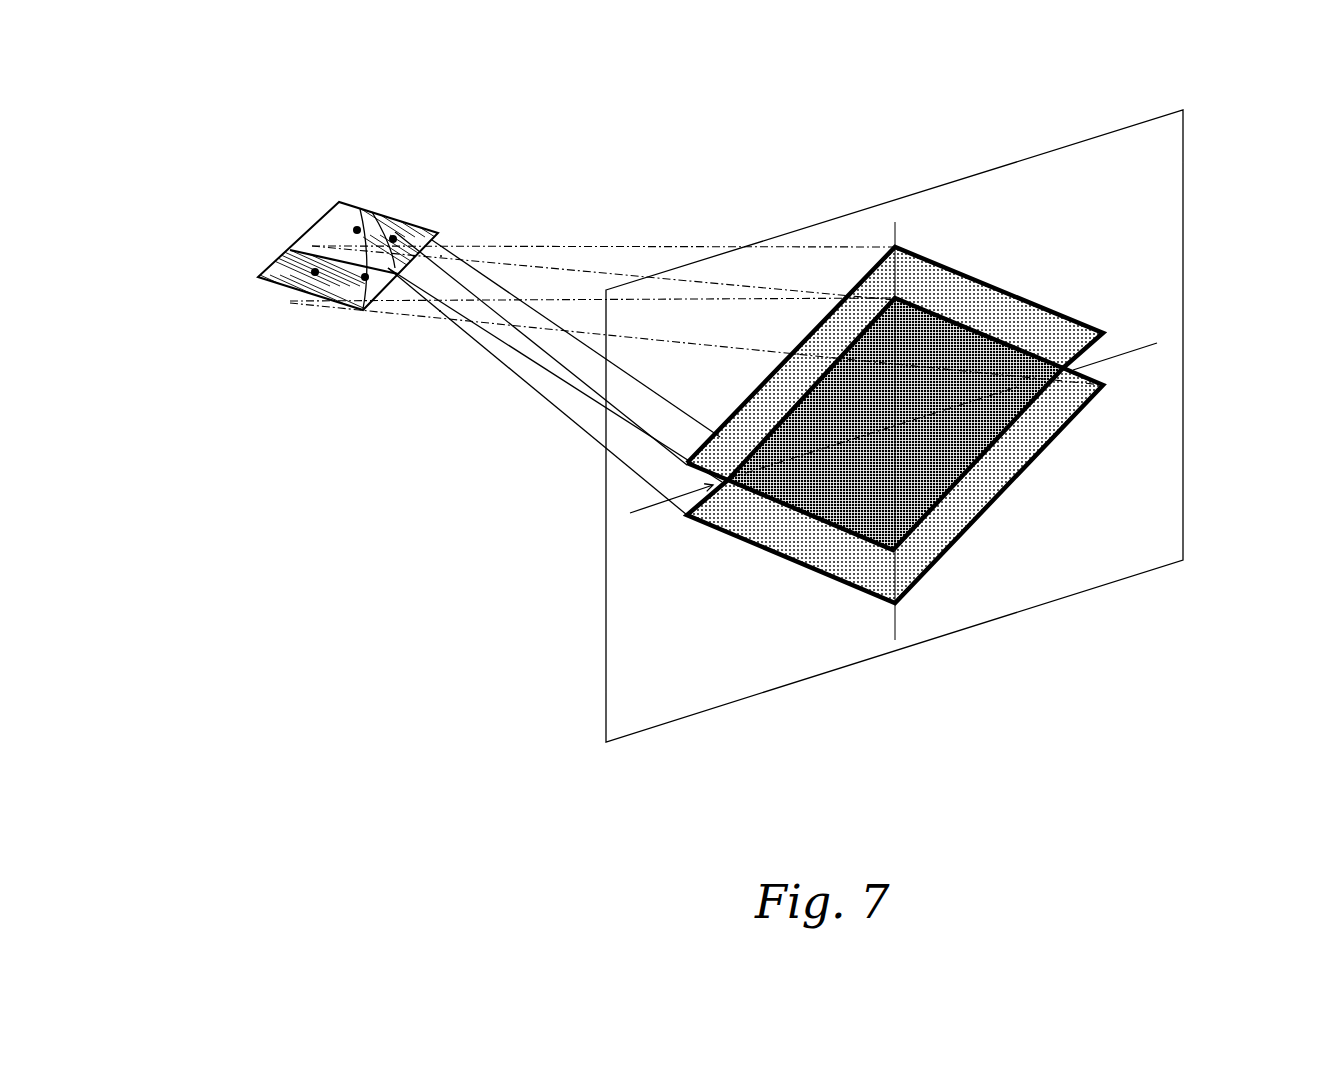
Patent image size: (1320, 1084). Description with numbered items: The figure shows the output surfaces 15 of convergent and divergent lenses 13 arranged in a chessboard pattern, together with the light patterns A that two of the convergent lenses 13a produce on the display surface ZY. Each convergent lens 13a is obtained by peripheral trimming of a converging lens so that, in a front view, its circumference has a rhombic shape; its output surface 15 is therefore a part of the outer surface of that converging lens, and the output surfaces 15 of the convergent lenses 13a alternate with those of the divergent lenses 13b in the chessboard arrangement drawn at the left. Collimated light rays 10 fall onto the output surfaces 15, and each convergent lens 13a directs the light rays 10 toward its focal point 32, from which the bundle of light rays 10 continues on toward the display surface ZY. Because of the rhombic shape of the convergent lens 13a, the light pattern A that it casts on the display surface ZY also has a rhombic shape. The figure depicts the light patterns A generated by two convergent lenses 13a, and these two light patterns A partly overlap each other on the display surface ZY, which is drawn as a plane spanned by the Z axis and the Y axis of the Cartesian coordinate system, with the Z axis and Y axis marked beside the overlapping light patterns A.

The light ray 10 is at (696, 381).
The focal point 32 is at (419, 276).
The output surface 15 is at (303, 353).
The lens 13 is at (298, 365).
The convergent lens 13a is at (307, 365).
The divergent lens 13b is at (298, 351).
The light pattern A is at (697, 137).
The axis of the Cartesian coordinate system Y is at (1158, 371).
The axis of the Cartesian coordinate system Z is at (812, 579).
The display surface ZY is at (943, 426).